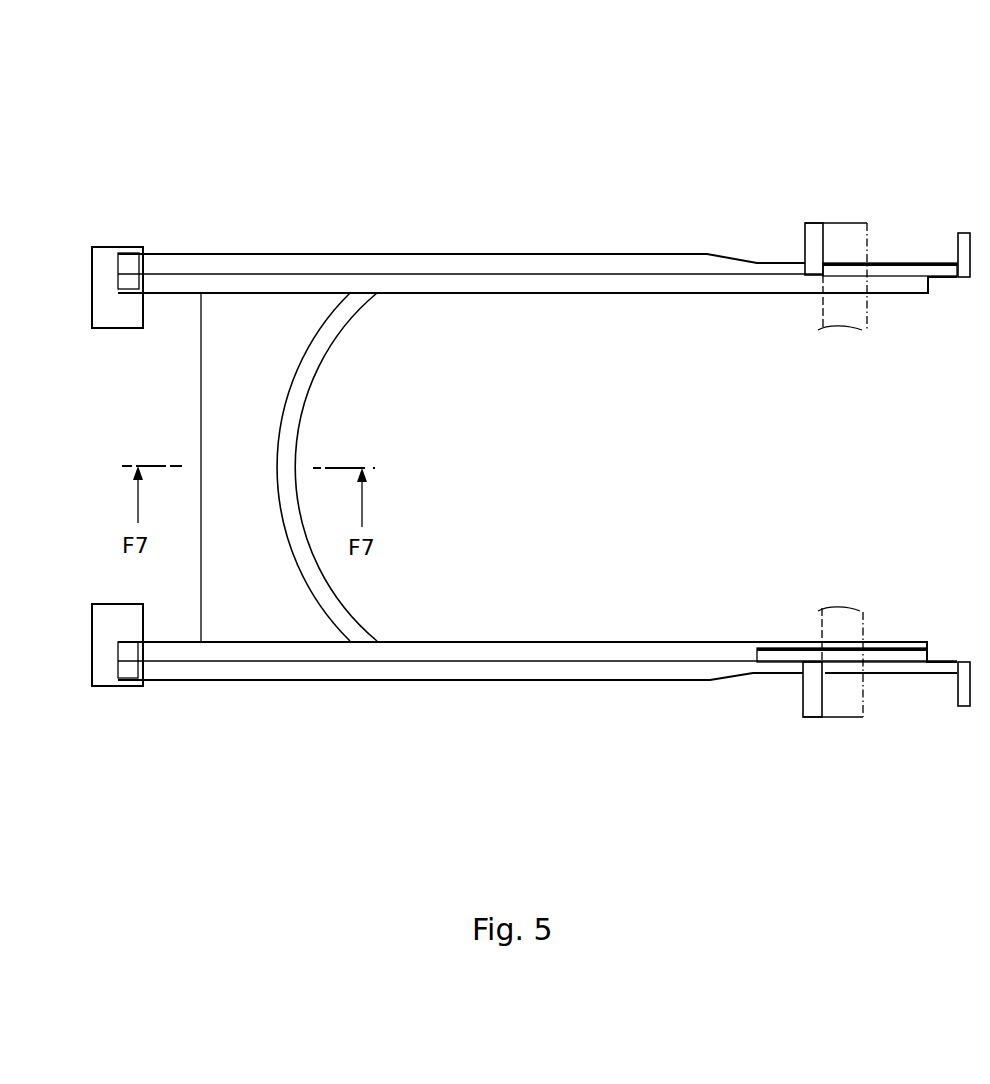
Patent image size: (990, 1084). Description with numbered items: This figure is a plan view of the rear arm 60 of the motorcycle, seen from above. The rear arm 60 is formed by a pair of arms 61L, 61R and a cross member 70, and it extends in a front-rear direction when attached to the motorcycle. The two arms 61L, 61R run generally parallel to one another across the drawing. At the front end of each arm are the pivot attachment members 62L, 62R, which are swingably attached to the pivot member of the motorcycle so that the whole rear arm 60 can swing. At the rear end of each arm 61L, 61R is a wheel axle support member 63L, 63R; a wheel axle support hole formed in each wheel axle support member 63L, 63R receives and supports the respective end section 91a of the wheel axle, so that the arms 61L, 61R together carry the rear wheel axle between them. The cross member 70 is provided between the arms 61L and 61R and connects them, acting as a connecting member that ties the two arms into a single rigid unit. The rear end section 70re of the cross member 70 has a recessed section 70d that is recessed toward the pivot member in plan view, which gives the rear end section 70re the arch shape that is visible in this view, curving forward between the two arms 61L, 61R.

The rear arm 60 is at (887, 165).
The arm 61R is at (538, 268).
The arm 61L is at (492, 650).
The pivot attachment member 62R is at (102, 265).
The pivot attachment member 62L is at (105, 660).
The wheel axle support member 63R is at (905, 285).
The wheel axle support member 63L is at (892, 653).
The cross member 70 is at (305, 312).
The rear end section 70re is at (277, 398).
The recessed section 70d is at (298, 435).
The end section 91a is at (837, 222).